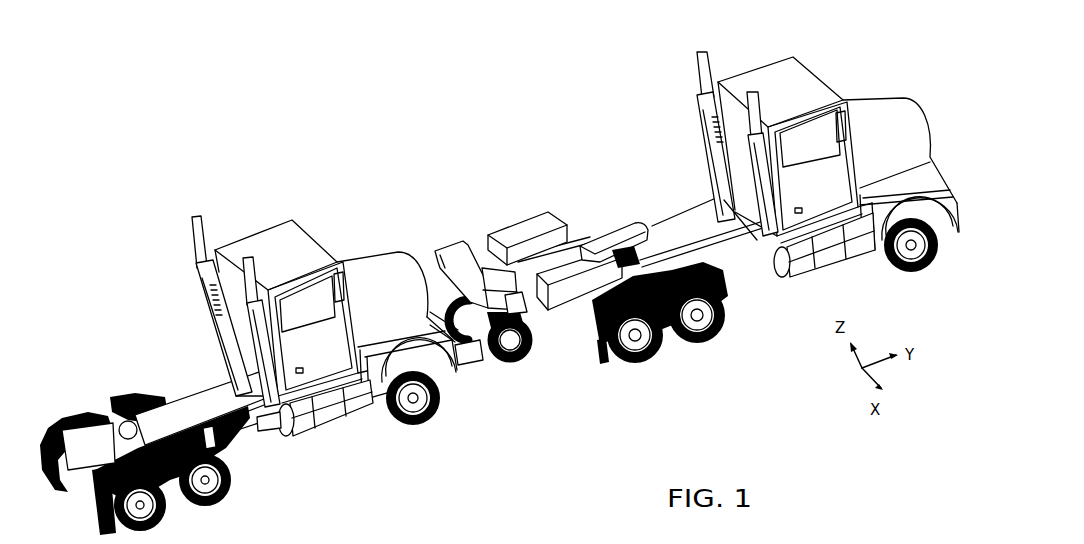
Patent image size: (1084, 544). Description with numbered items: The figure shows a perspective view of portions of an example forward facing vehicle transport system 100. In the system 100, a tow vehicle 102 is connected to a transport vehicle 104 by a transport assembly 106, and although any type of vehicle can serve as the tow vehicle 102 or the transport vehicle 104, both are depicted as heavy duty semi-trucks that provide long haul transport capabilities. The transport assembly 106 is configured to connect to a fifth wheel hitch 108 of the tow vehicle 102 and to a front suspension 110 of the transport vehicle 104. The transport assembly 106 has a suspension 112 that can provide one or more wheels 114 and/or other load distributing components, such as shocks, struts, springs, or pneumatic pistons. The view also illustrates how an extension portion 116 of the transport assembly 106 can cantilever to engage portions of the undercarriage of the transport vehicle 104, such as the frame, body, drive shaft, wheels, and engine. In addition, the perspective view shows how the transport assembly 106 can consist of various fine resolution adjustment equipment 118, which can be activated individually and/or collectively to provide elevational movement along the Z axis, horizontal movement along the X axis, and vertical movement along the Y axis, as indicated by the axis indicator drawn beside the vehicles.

The forward facing vehicle transport system 100 is at (186, 145).
The tow vehicle 102 is at (783, 60).
The transport vehicle 104 is at (292, 218).
The transport assembly 106 is at (472, 235).
The fifth wheel hitch 108 is at (617, 225).
The front suspension 110 is at (420, 430).
The suspension 112 is at (510, 383).
The wheel 114 is at (530, 343).
The extension portion 116 is at (272, 438).
The fine resolution adjustment equipment 118 is at (523, 313).